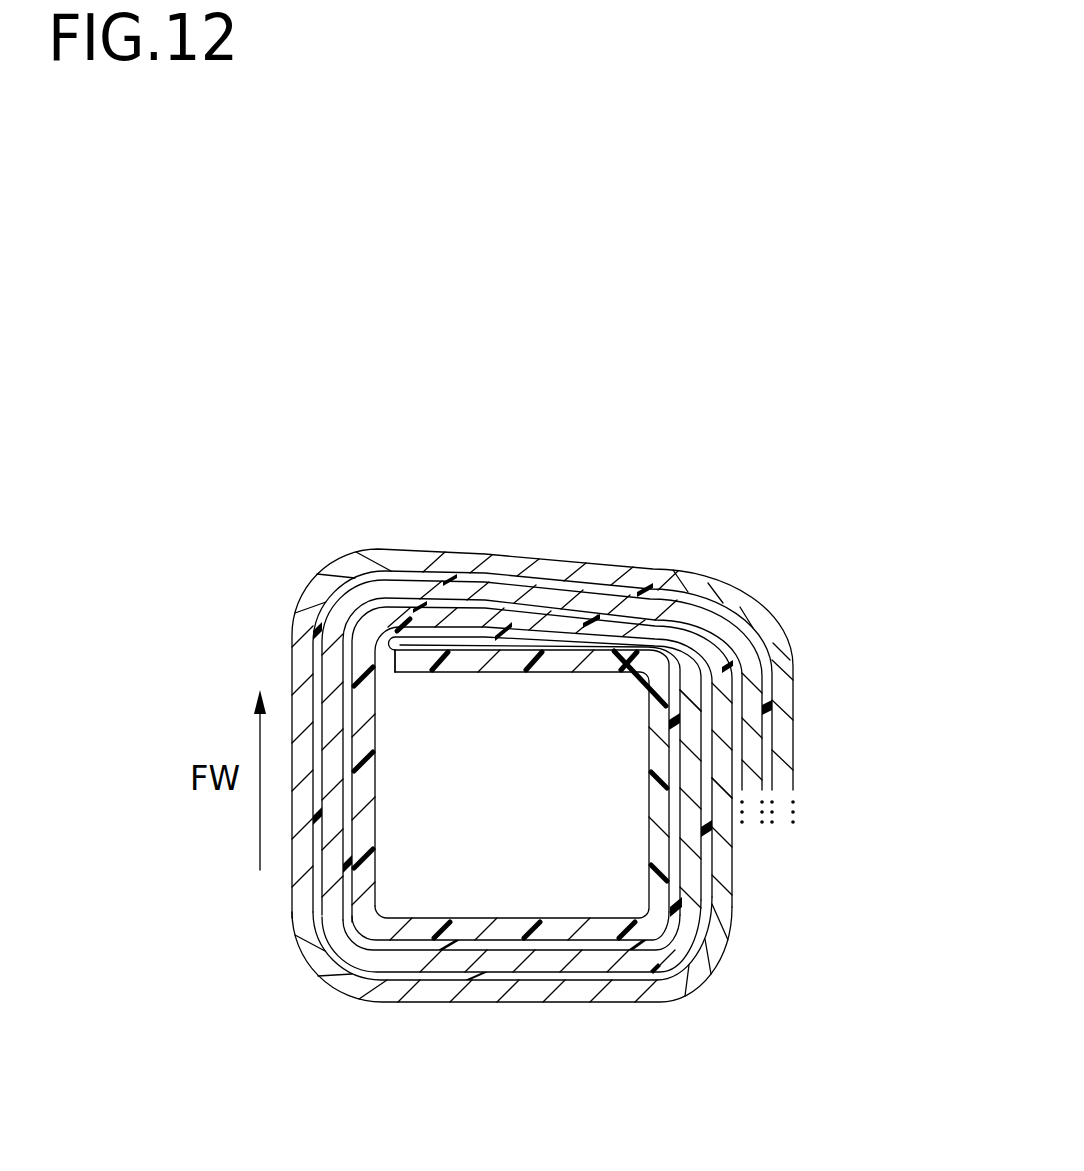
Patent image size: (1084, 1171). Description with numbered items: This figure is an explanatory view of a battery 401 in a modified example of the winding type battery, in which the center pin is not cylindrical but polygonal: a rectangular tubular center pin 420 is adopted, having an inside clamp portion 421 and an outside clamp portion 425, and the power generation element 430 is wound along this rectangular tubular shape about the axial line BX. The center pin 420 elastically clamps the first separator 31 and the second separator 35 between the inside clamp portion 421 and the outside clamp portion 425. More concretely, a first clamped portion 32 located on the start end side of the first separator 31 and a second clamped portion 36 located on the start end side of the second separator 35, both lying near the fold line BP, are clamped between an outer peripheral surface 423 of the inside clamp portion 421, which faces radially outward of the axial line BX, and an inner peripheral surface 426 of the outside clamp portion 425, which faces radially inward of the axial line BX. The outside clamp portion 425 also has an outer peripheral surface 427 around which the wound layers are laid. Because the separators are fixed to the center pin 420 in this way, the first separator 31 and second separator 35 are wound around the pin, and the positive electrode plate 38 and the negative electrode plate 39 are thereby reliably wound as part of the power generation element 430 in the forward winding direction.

The power generation element 430 is at (606, 639).
The battery 401 is at (712, 343).
The second clamped portion 36 is at (542, 737).
The second separator 35 is at (411, 635).
The inner peripheral surface 426 is at (483, 632).
The outer peripheral surface 427 is at (562, 624).
The outside clamp portion 425 is at (530, 625).
The first clamped portion 32 is at (543, 676).
The first separator 31 is at (647, 632).
The center pin 420 is at (378, 838).
The outer peripheral surface 423 is at (562, 650).
The inside clamp portion 421 is at (475, 663).
The fold line BP is at (386, 652).
The axial line BX is at (510, 795).
The positive electrode plate 38 is at (695, 704).
The negative electrode plate 39 is at (723, 749).